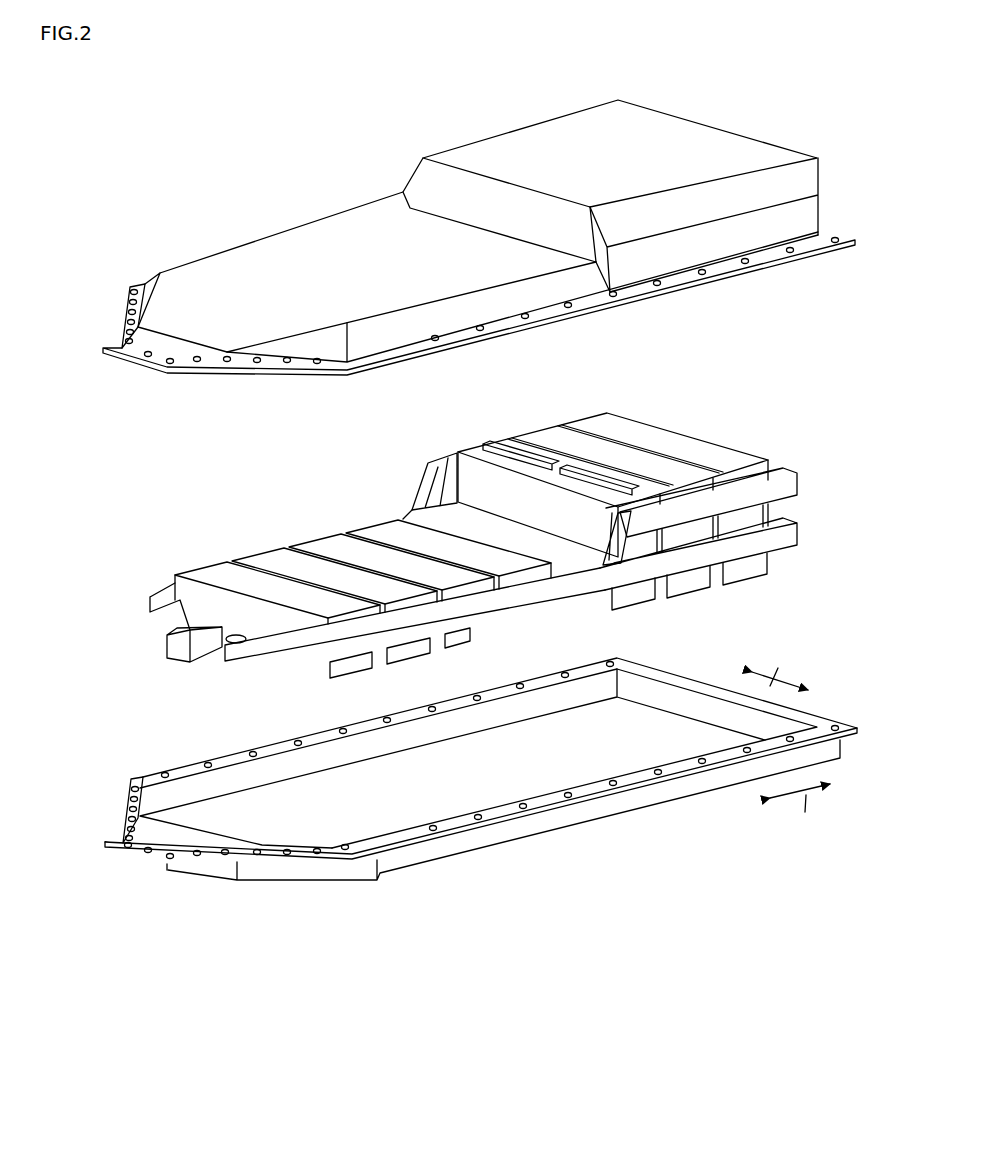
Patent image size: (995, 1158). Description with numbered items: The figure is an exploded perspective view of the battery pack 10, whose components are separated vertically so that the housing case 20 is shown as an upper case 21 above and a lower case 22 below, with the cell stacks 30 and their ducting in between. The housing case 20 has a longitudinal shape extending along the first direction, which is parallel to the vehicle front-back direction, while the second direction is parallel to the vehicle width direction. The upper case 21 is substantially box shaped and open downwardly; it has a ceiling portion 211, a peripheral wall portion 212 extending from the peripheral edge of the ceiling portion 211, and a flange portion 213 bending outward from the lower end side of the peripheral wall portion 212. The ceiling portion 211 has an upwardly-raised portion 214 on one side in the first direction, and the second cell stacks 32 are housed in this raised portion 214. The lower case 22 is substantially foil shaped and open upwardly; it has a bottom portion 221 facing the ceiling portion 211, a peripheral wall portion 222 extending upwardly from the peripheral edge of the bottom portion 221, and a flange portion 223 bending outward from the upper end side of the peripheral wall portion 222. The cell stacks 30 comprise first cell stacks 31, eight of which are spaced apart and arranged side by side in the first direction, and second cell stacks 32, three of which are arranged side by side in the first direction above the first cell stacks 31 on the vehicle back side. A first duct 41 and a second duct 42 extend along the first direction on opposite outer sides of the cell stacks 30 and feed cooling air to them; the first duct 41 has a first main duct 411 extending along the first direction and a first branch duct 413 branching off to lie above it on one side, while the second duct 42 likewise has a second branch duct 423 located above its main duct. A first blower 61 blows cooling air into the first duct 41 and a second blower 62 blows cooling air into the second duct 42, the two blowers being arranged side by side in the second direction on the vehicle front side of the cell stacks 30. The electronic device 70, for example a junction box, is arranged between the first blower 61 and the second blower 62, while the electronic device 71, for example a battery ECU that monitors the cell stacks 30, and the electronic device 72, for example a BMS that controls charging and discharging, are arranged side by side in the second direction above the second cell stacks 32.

The battery pack 10 is at (797, 106).
The housing case 20 is at (77, 487).
The upper case 21 is at (120, 413).
The lower case 22 is at (111, 798).
The cell stacks 30 is at (474, 510).
The first cell stacks 31 is at (685, 578).
The second cell stacks 32 is at (642, 422).
The first duct 41 is at (590, 588).
The second duct 42 is at (398, 491).
The first blower 61 is at (234, 636).
The second blower 62 is at (191, 610).
The electronic device 70 is at (200, 657).
The electronic device 71 is at (502, 452).
The electronic device 72 is at (592, 478).
The ceiling portion 211 is at (300, 262).
The peripheral wall portion 212 is at (530, 292).
The flange portion 213 is at (732, 270).
The raised portion 214 is at (533, 150).
The bottom portion 221 is at (412, 800).
The peripheral wall portion 222 is at (560, 817).
The flange portion 223 is at (680, 768).
The first main duct 411 is at (797, 531).
The first branch duct 413 is at (797, 481).
The second branch duct 423 is at (435, 463).